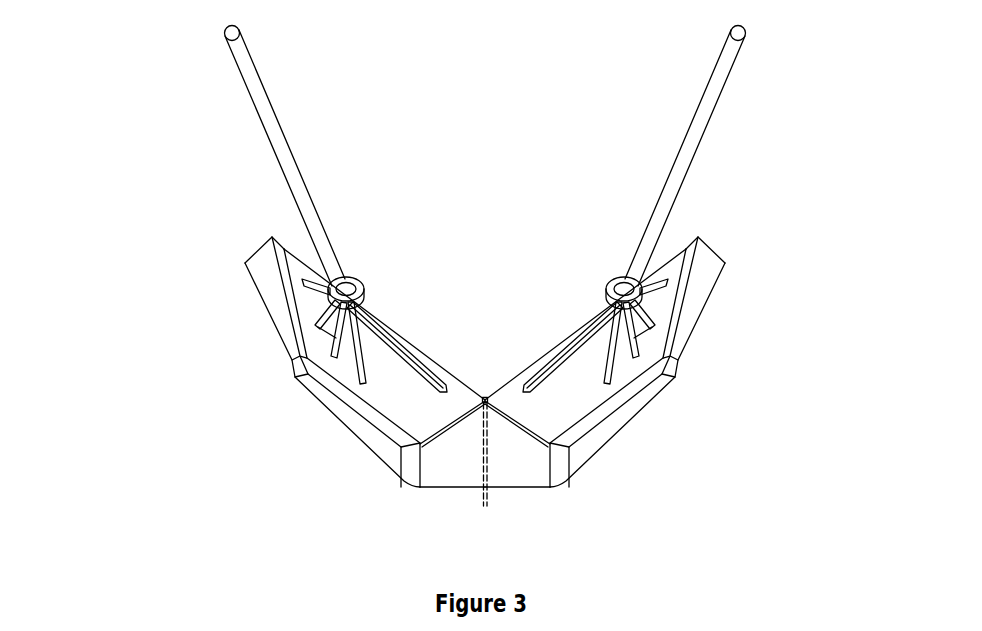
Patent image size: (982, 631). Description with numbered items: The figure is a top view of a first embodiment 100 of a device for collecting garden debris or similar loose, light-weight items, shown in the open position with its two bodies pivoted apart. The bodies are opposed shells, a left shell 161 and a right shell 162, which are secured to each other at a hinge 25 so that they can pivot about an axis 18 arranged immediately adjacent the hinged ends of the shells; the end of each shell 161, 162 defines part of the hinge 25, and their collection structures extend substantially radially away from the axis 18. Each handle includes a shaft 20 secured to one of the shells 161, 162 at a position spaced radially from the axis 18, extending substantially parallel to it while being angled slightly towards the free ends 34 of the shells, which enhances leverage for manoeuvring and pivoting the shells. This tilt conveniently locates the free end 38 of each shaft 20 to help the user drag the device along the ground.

The first embodiment 100 is at (158, 186).
The shaft 20 is at (285, 147).
The free end of shaft 38 is at (236, 33).
The free end of shell 34 is at (257, 258).
The right shell 162 is at (335, 405).
The left shell 161 is at (642, 405).
The axis 18 is at (485, 400).
The hinge 25 is at (484, 495).